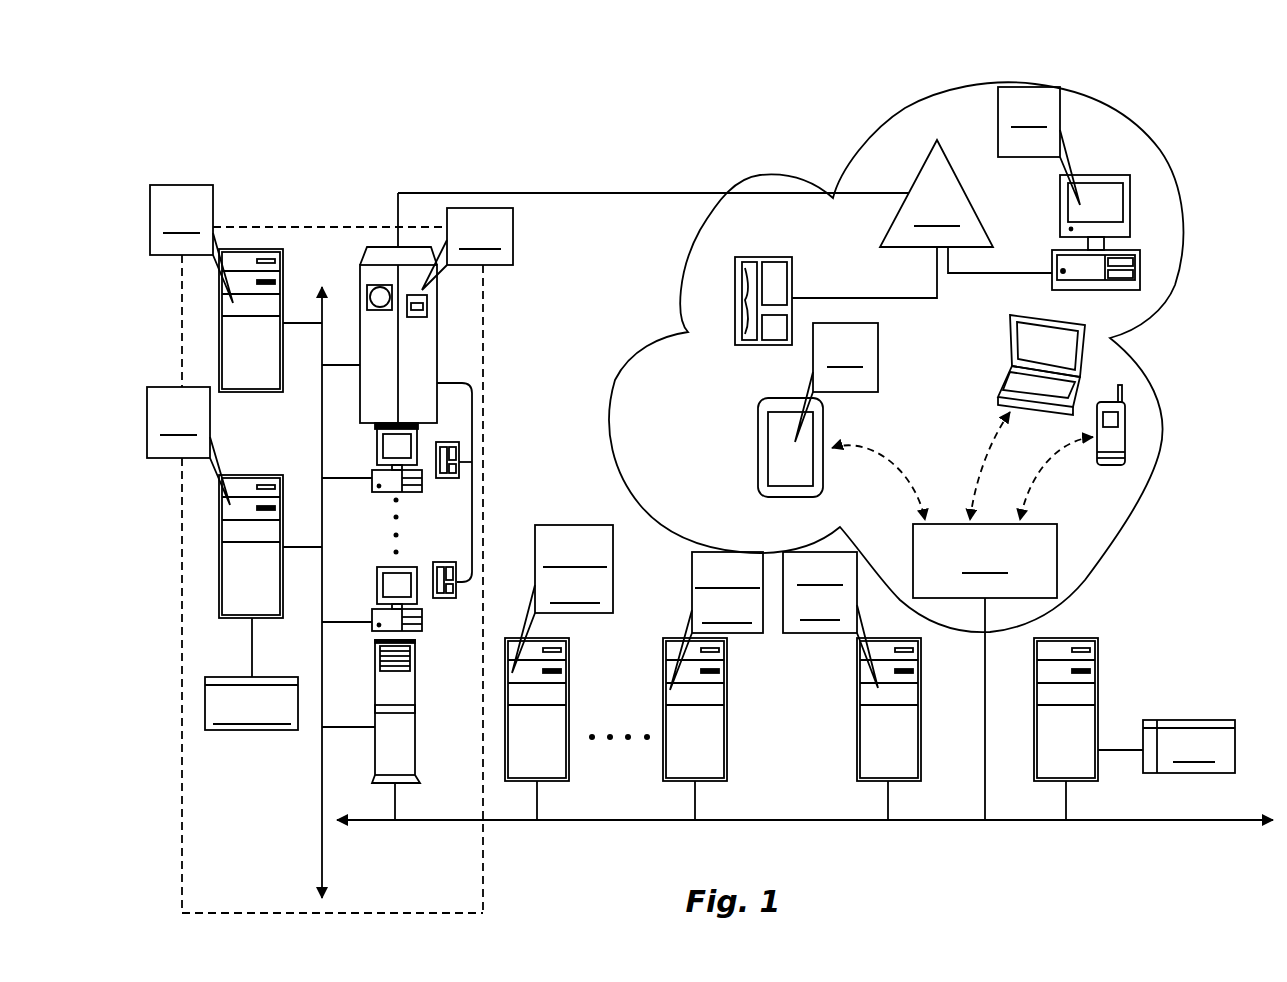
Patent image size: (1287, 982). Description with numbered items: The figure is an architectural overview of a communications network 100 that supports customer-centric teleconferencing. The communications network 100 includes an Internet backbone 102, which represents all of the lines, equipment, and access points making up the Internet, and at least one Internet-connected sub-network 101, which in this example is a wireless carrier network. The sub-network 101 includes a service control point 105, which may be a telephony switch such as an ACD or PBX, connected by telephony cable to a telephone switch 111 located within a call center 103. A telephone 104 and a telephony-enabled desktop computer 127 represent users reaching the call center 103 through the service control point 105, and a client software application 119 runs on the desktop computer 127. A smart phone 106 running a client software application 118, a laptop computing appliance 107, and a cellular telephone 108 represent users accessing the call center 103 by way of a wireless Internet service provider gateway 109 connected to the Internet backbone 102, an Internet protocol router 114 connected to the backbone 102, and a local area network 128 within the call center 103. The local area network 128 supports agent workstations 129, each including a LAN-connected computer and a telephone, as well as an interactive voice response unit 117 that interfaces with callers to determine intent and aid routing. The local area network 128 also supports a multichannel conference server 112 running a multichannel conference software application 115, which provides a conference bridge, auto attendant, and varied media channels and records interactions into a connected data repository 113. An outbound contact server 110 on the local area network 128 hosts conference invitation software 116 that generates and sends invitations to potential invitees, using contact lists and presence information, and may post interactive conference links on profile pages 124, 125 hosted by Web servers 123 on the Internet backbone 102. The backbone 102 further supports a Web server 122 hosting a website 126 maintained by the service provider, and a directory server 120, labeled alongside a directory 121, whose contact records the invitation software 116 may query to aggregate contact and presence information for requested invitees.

The communications network 100 is at (303, 139).
The sub-network 101 is at (866, 145).
The Internet backbone 102 is at (1097, 822).
The call center 103 is at (502, 389).
The telephone 104 is at (793, 292).
The service control point 105 is at (995, 215).
The smart phone 106 is at (757, 456).
The laptop computing appliance 107 is at (1010, 372).
The cellular telephone 108 is at (1106, 466).
The wireless Internet service provider gateway 109 is at (912, 562).
The outbound contact server 110 is at (283, 279).
The telephone switch 111 is at (438, 338).
The multichannel conference server 112 is at (263, 621).
The data repository 113 is at (250, 731).
The Internet protocol router 114 is at (416, 693).
The multichannel conference software application 115 is at (182, 386).
The conference invitation software 116 is at (187, 184).
The interactive voice response unit 117 is at (513, 246).
The client software application 118 is at (878, 360).
The client software application 119 is at (1062, 97).
The directory server 120 is at (1099, 700).
The directory 121 is at (1192, 719).
The Web server 122 is at (856, 715).
The Web servers 123 is at (609, 792).
The profile page 124 is at (575, 524).
The profile page 125 is at (691, 590).
The website 126 is at (820, 634).
The desktop computer 127 is at (1059, 230).
The local area network 128 is at (322, 777).
The agent workstations 129 is at (334, 504).